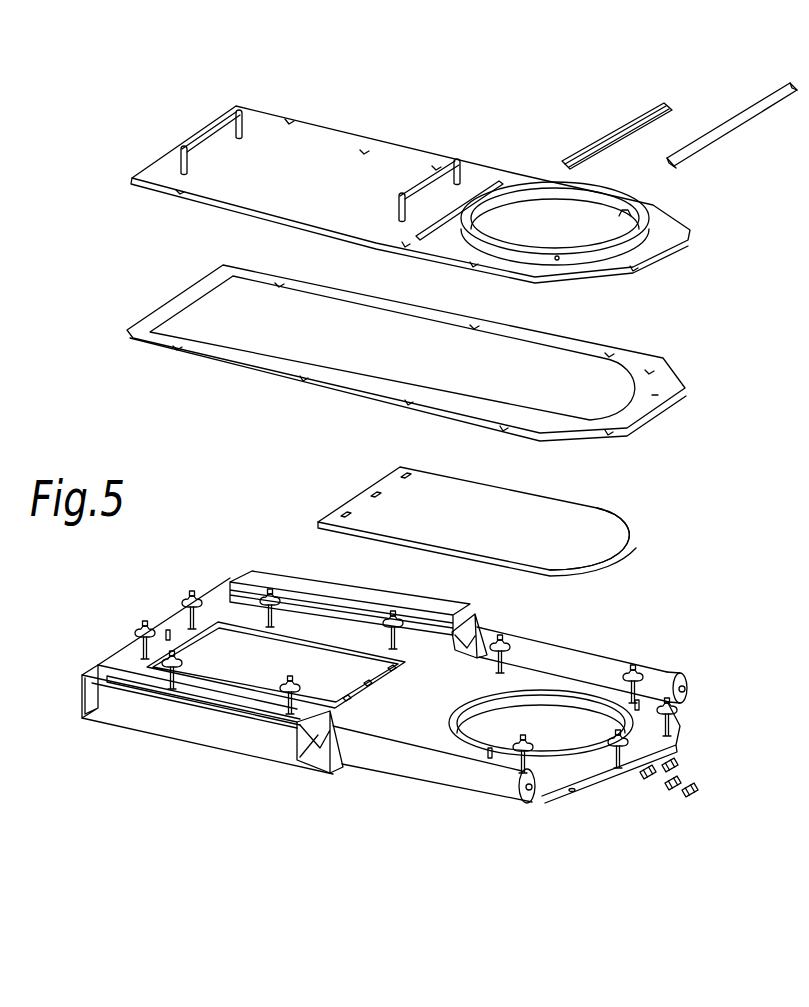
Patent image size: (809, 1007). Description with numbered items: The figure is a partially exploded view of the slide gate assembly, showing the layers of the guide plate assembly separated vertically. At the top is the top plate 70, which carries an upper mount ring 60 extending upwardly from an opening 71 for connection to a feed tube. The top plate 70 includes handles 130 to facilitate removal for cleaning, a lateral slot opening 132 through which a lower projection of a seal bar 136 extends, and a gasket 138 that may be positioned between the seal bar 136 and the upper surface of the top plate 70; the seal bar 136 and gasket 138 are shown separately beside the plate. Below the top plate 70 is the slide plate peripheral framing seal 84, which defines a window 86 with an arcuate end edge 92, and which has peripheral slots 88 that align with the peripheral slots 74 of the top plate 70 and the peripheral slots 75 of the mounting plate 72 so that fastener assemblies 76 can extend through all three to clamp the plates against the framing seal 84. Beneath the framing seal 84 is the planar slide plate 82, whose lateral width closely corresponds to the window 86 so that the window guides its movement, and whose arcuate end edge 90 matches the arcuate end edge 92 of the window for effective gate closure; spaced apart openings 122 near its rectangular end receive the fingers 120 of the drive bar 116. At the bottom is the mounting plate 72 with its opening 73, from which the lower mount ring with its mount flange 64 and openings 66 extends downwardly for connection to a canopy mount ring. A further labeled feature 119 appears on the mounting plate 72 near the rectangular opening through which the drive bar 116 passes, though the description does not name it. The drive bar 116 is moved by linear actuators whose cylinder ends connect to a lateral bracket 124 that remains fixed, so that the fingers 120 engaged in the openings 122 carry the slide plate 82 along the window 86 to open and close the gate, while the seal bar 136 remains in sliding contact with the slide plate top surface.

The upper mount ring 60 is at (600, 228).
The mount flange 64 is at (594, 790).
The openings 66 is at (574, 793).
The top plate 70 is at (362, 152).
The opening 71 is at (627, 216).
The mounting plate 72 is at (540, 683).
The opening 73 is at (597, 690).
The peripheral slots 74 is at (296, 118).
The peripheral slots 75 is at (262, 620).
The fastener assemblies 76 is at (185, 586).
The slide plate 82 is at (603, 518).
The slide plate peripheral framing seal 84 is at (628, 353).
The window 86 is at (213, 312).
The peripheral slots 88 is at (176, 355).
The arcuate end edge 90 is at (640, 537).
The arcuate end edge 92 is at (648, 374).
The drive bar 116 is at (287, 753).
The recess rim 119 is at (345, 681).
The fingers 120 is at (367, 681).
The openings 122 is at (405, 478).
The lateral bracket 124 is at (313, 757).
The handles 130 is at (222, 122).
The lateral slot opening 132 is at (448, 200).
The seal bar 136 is at (738, 112).
The gasket 138 is at (657, 100).